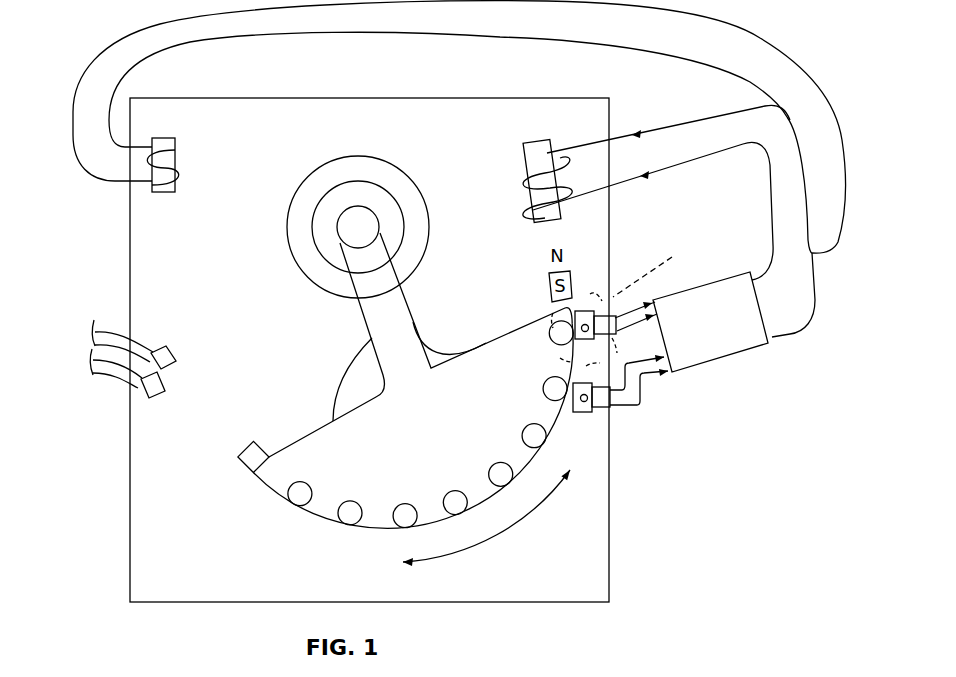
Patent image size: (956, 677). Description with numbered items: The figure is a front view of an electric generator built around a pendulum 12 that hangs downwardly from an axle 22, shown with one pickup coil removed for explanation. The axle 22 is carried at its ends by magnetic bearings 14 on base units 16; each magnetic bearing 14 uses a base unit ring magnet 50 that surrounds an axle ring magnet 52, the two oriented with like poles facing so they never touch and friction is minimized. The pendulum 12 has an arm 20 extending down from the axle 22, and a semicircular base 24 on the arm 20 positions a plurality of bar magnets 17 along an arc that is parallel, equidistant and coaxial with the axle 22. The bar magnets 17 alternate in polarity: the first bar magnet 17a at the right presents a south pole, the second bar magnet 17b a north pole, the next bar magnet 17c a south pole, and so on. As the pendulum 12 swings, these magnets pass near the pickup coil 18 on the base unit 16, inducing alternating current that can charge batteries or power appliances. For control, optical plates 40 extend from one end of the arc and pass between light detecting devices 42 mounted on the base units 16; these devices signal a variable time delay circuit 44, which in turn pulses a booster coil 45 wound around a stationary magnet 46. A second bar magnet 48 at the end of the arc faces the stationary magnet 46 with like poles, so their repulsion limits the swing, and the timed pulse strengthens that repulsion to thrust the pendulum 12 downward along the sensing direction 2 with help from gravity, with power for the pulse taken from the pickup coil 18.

The sensing axis 2 is at (652, 268).
The pendulum 12 is at (437, 380).
The magnetic bearing 14 is at (387, 205).
The base unit 16 is at (279, 181).
The bar magnet 17 is at (468, 424).
The first bar magnet 17a is at (549, 334).
The second bar magnet 17b is at (543, 390).
The magnet 17c is at (522, 440).
The pickup coil 18 is at (335, 390).
The arm 20 is at (413, 294).
The axle 22 is at (370, 225).
The semicircular base 24 is at (437, 424).
The optical plate 40 is at (590, 308).
The light detecting device 42 is at (637, 302).
The variable time delay circuit 44 is at (701, 330).
The booster coil 45 is at (175, 158).
The stationary magnet 46 is at (157, 133).
The second bar magnet 48 is at (577, 270).
The base unit ring magnet 50 is at (399, 193).
The axle ring magnet 52 is at (393, 225).